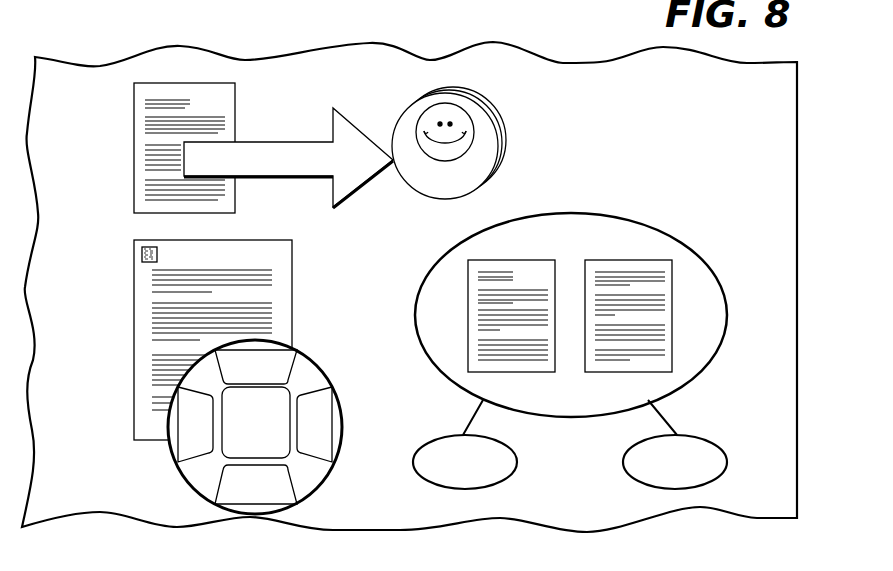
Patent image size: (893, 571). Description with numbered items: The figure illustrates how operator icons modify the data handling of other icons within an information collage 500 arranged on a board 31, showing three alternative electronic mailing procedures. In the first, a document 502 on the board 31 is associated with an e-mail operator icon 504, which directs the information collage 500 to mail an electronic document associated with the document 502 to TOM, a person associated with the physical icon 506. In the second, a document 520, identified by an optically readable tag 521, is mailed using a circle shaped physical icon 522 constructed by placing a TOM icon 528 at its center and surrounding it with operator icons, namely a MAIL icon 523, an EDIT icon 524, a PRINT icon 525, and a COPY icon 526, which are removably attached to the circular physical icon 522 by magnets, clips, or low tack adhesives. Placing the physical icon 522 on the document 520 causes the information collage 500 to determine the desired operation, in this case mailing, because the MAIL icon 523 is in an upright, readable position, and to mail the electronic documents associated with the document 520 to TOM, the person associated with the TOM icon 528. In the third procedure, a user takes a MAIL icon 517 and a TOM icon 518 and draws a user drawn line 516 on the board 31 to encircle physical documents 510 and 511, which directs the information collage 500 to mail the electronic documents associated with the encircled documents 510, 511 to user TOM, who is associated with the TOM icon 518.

The board 31 is at (798, 133).
The information collage 500 is at (603, 97).
The document 502 is at (134, 153).
The e-mail operator icon 504 is at (331, 140).
The physical icon 506 is at (508, 141).
The physical document 510 is at (472, 280).
The physical document 511 is at (650, 260).
The user drawn line 516 is at (728, 324).
The MAIL icon 517 is at (517, 457).
The TOM icon 518 is at (727, 458).
The document 520 is at (133, 255).
The optically readable tag 521 is at (148, 265).
The circle shaped physical icon 522 is at (244, 437).
The MAIL icon 523 is at (263, 350).
The EDIT icon 524 is at (335, 430).
The PRINT icon 525 is at (295, 487).
The COPY icon 526 is at (173, 453).
The TOM icon 528 is at (228, 456).